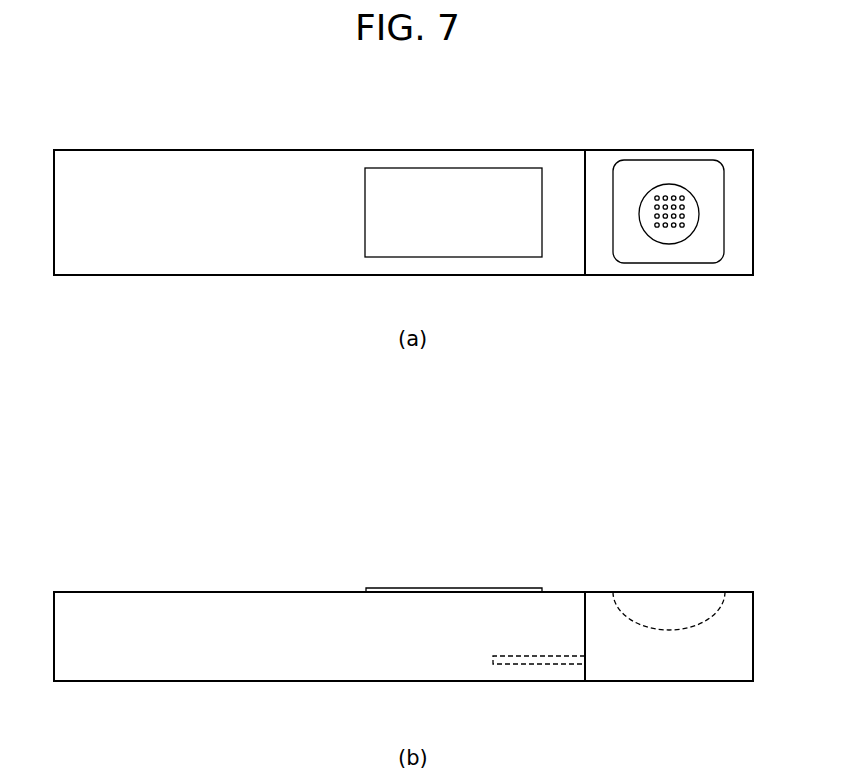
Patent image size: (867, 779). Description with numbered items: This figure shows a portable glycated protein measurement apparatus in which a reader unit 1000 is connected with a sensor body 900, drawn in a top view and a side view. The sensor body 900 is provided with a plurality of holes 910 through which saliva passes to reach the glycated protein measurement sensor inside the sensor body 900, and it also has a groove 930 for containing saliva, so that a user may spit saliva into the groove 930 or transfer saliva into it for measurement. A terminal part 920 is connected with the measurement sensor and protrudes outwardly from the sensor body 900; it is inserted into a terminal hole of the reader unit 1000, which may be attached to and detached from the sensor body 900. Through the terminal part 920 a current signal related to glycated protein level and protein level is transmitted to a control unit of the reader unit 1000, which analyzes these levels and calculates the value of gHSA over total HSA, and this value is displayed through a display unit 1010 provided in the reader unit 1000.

The reader unit 1000 is at (256, 188).
The display unit 1010 is at (458, 172).
The sensor body 900 is at (733, 168).
The holes 910 is at (670, 197).
The terminal part 920 is at (528, 662).
The groove 930 is at (668, 618).